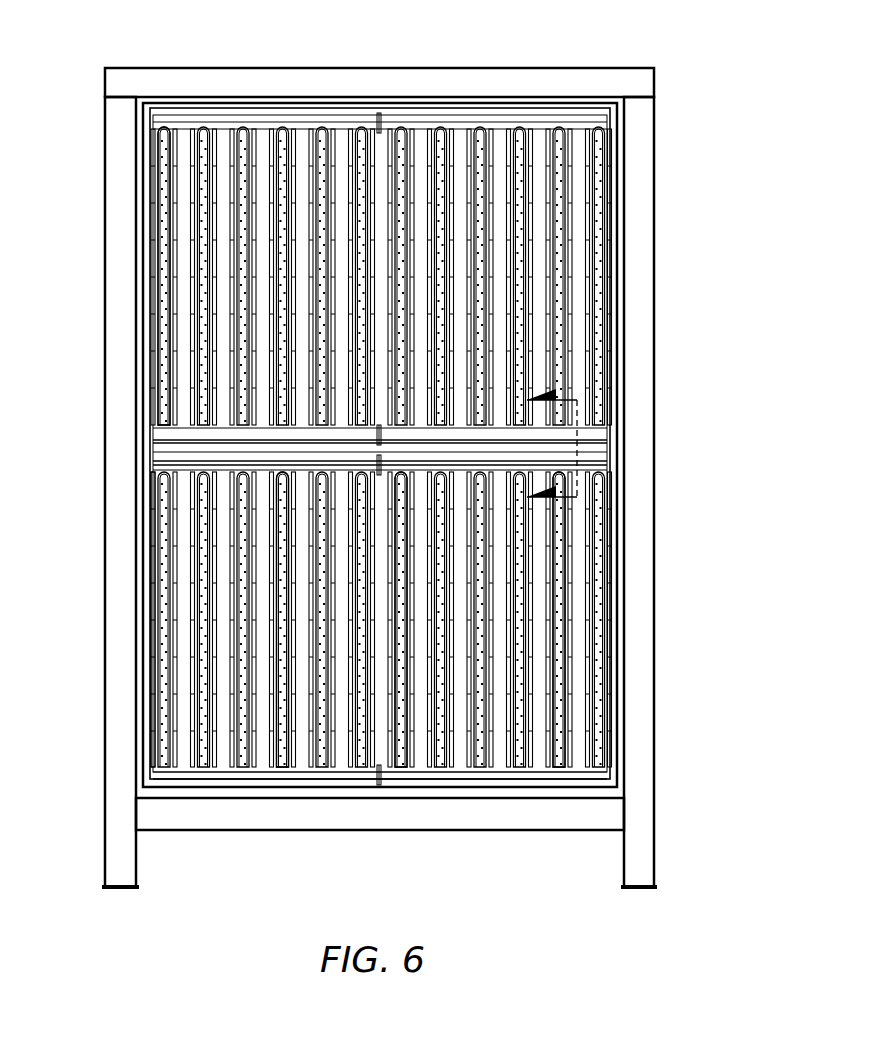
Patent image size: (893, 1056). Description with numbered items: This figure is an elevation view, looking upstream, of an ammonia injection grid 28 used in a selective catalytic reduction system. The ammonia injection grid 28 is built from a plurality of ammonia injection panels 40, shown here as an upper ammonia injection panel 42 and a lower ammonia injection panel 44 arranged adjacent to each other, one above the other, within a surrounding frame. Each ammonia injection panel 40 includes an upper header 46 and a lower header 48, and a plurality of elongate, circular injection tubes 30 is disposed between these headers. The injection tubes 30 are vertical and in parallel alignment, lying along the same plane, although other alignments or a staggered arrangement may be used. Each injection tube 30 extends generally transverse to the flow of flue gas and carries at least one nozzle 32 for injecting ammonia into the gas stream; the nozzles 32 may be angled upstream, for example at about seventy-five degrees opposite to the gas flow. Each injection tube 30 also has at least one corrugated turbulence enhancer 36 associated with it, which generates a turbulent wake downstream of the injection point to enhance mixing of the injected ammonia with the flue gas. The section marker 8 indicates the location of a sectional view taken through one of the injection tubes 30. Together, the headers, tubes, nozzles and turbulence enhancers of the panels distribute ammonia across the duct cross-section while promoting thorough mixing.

The ammonia injection grid 28 is at (700, 60).
The injection tube 30 is at (165, 232).
The nozzle 32 is at (150, 605).
The corrugated turbulence enhancer 36 is at (150, 330).
The ammonia injection panel 40 is at (600, 255).
The upper ammonia injection panel 42 is at (262, 172).
The lower ammonia injection panel 44 is at (262, 722).
The upper header 46 is at (445, 124).
The lower header 48 is at (150, 430).
The section line 8 is at (552, 445).